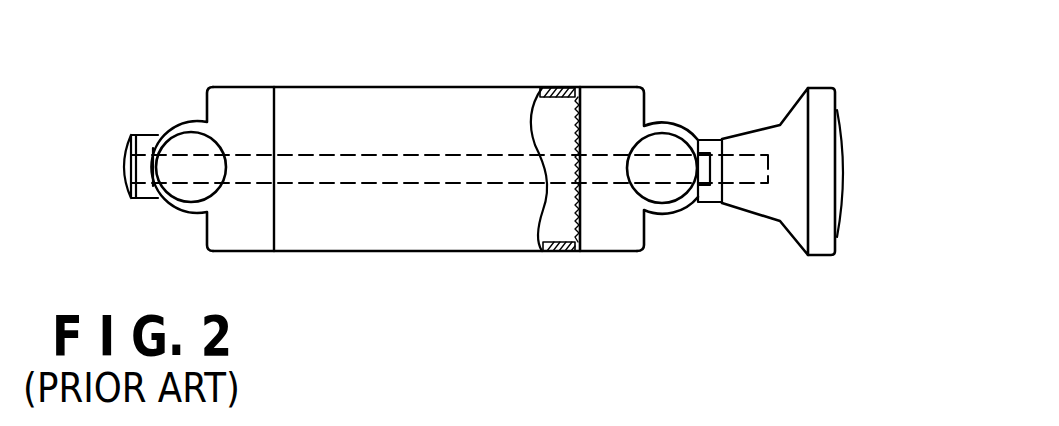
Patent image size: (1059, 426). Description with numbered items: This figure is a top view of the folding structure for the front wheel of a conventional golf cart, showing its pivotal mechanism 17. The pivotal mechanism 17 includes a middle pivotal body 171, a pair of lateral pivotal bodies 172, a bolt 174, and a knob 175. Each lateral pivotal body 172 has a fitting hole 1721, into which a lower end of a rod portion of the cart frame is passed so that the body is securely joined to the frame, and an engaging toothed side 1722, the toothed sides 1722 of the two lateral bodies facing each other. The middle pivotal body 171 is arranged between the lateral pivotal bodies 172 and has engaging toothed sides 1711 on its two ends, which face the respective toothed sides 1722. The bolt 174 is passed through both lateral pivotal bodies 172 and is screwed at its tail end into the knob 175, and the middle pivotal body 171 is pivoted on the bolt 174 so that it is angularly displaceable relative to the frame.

The pivotal mechanism 17 is at (510, 172).
The middle pivotal body 171 is at (382, 103).
The engaging toothed sides 1711 is at (573, 126).
The lateral pivotal bodies 172 is at (232, 102).
The fitting holes 1721 is at (182, 140).
The engaging toothed sides 1722 is at (581, 137).
The bolt 174 is at (483, 184).
The knob 175 is at (823, 100).